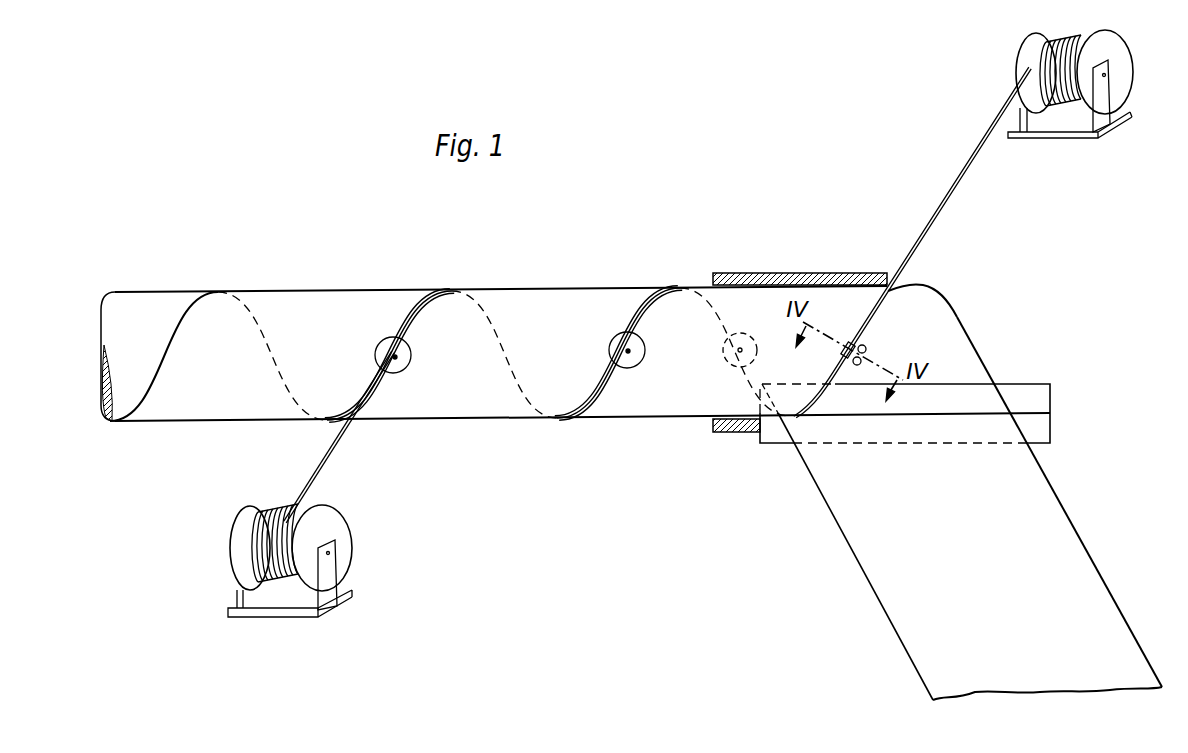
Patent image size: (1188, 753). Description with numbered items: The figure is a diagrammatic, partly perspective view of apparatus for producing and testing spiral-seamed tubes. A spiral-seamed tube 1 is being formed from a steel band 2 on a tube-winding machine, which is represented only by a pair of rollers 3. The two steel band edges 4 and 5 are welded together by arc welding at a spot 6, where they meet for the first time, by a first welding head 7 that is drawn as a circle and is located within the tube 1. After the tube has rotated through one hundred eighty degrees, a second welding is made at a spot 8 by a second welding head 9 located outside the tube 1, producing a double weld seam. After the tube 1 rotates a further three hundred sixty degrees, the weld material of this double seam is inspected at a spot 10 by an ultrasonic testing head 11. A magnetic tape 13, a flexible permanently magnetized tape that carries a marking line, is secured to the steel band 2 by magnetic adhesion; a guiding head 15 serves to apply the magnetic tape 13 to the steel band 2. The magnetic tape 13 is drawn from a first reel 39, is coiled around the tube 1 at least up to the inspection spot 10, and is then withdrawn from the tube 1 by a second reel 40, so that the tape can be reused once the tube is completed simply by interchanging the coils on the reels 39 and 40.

The spiral-seamed tube 1 is at (336, 302).
The steel band 2 is at (1047, 501).
The rollers 3 is at (1025, 383).
The steel band edge 4 is at (905, 300).
The steel band edge 5 is at (818, 498).
The spot 6 is at (739, 353).
The first welding head 7 is at (726, 343).
The spot 8 is at (629, 353).
The second welding head 9 is at (613, 343).
The spot 10 is at (396, 358).
The ultrasonic testing head 11 is at (403, 350).
The magnetic tape 13 is at (957, 197).
The guiding head 15 is at (853, 340).
The first reel 39 is at (1085, 95).
The second reel 40 is at (247, 530).